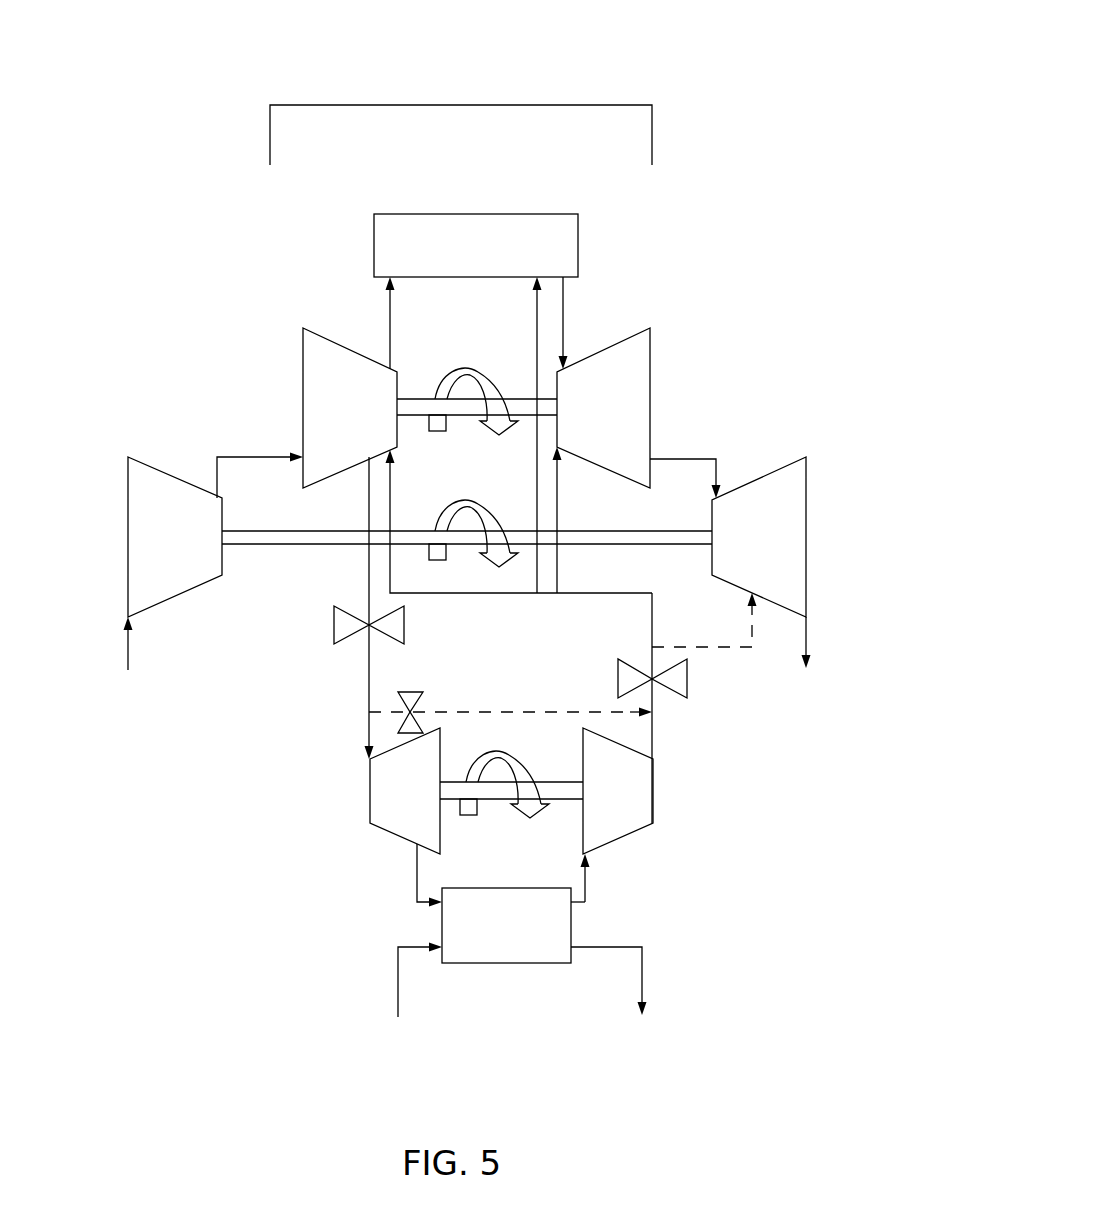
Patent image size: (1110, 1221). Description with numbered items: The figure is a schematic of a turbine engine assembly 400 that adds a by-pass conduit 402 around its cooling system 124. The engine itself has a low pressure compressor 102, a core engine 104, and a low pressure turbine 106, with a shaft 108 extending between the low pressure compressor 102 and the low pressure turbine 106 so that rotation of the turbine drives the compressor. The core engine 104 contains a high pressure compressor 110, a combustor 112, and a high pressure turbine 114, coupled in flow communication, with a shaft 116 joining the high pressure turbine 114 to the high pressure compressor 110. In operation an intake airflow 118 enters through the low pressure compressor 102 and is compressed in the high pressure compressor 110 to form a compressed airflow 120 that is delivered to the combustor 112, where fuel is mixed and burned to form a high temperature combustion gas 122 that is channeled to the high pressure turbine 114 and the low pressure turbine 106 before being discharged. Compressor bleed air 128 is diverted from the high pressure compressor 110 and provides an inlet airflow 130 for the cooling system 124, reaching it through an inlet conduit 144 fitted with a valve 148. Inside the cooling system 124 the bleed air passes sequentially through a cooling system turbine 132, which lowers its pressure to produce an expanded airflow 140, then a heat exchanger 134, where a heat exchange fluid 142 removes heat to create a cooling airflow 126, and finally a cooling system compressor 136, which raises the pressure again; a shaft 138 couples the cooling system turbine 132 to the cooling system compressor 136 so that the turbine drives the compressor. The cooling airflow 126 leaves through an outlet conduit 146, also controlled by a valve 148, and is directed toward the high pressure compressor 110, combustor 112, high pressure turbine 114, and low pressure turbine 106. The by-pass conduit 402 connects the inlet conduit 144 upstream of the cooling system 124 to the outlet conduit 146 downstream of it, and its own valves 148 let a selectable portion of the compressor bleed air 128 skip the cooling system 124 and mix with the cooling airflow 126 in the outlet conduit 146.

The turbine engine assembly 400 is at (695, 45).
The core engine 104 is at (338, 105).
The combustor 112 is at (578, 243).
The compressed airflow 120 is at (390, 309).
The high temperature combustion gas 122 is at (563, 305).
The high pressure compressor 110 is at (303, 408).
The high pressure turbine 114 is at (650, 372).
The shaft 116 is at (421, 399).
The low pressure compressor 102 is at (128, 538).
The low pressure turbine 106 is at (806, 535).
The shaft 108 is at (681, 531).
The intake airflow 118 is at (128, 650).
The valve 148 is at (334, 625).
The inlet conduit 144 is at (369, 662).
The inlet airflow 130 is at (369, 678).
The compressor bleed air 128 is at (369, 733).
The outlet conduit 146 is at (640, 650).
The by-pass conduit 402 is at (605, 716).
The cooling airflow 126 is at (652, 740).
The cooling system turbine 132 is at (370, 800).
The cooling system compressor 136 is at (653, 793).
The shaft 138 is at (460, 782).
The expanded airflow 140 is at (417, 876).
The heat exchanger 134 is at (571, 925).
The heat exchange fluid 142 is at (642, 980).
The cooling system 124 is at (676, 916).